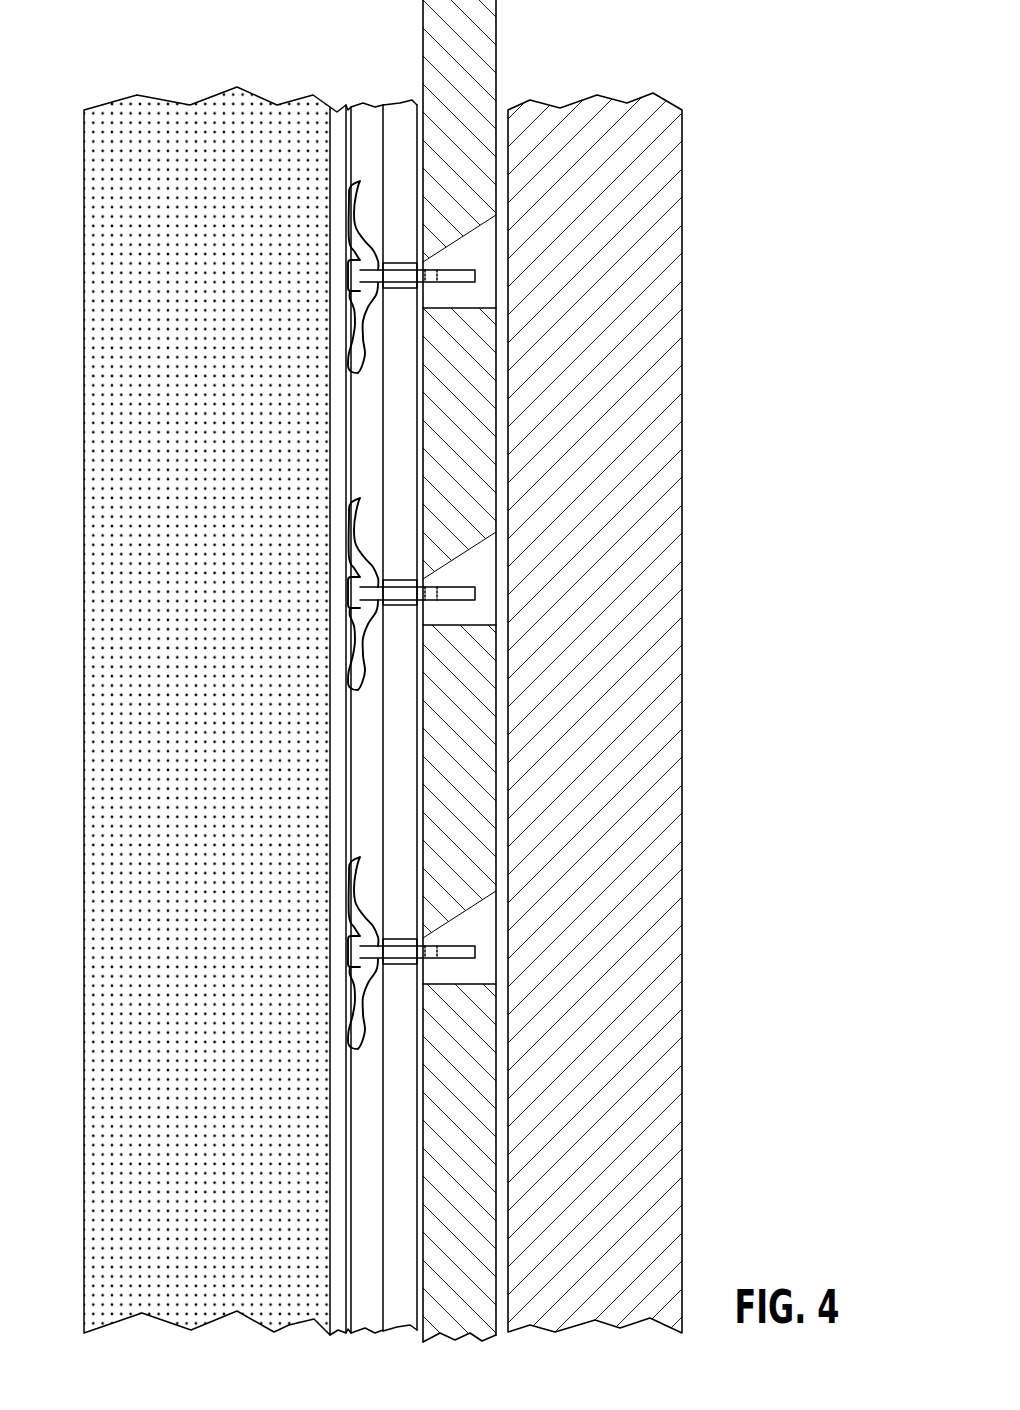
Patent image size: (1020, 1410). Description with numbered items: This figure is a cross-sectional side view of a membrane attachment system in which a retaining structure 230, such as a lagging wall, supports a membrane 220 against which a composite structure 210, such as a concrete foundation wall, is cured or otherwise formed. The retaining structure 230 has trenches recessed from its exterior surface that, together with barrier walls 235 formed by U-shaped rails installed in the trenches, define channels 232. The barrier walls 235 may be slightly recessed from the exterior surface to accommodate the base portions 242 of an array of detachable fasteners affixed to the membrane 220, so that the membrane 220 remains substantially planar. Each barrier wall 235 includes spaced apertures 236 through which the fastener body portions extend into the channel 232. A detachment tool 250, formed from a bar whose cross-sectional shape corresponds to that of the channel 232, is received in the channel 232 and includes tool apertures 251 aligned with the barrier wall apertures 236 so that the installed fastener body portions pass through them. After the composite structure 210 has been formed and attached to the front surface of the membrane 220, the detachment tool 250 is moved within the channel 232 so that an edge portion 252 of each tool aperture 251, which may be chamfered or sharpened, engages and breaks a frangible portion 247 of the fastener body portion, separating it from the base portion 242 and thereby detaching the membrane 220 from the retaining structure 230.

The composite structure 210 is at (175, 167).
The membrane 220 is at (340, 425).
The retaining structure 230 is at (622, 426).
The channel 232 is at (502, 743).
The barrier wall 235 is at (398, 1117).
The aperture 236 is at (400, 265).
The base portion 242 is at (360, 240).
The frangible portion 247 is at (435, 277).
The detachment tool 250 is at (465, 70).
The tool aperture 251 is at (453, 310).
The edge portion 252 is at (425, 258).